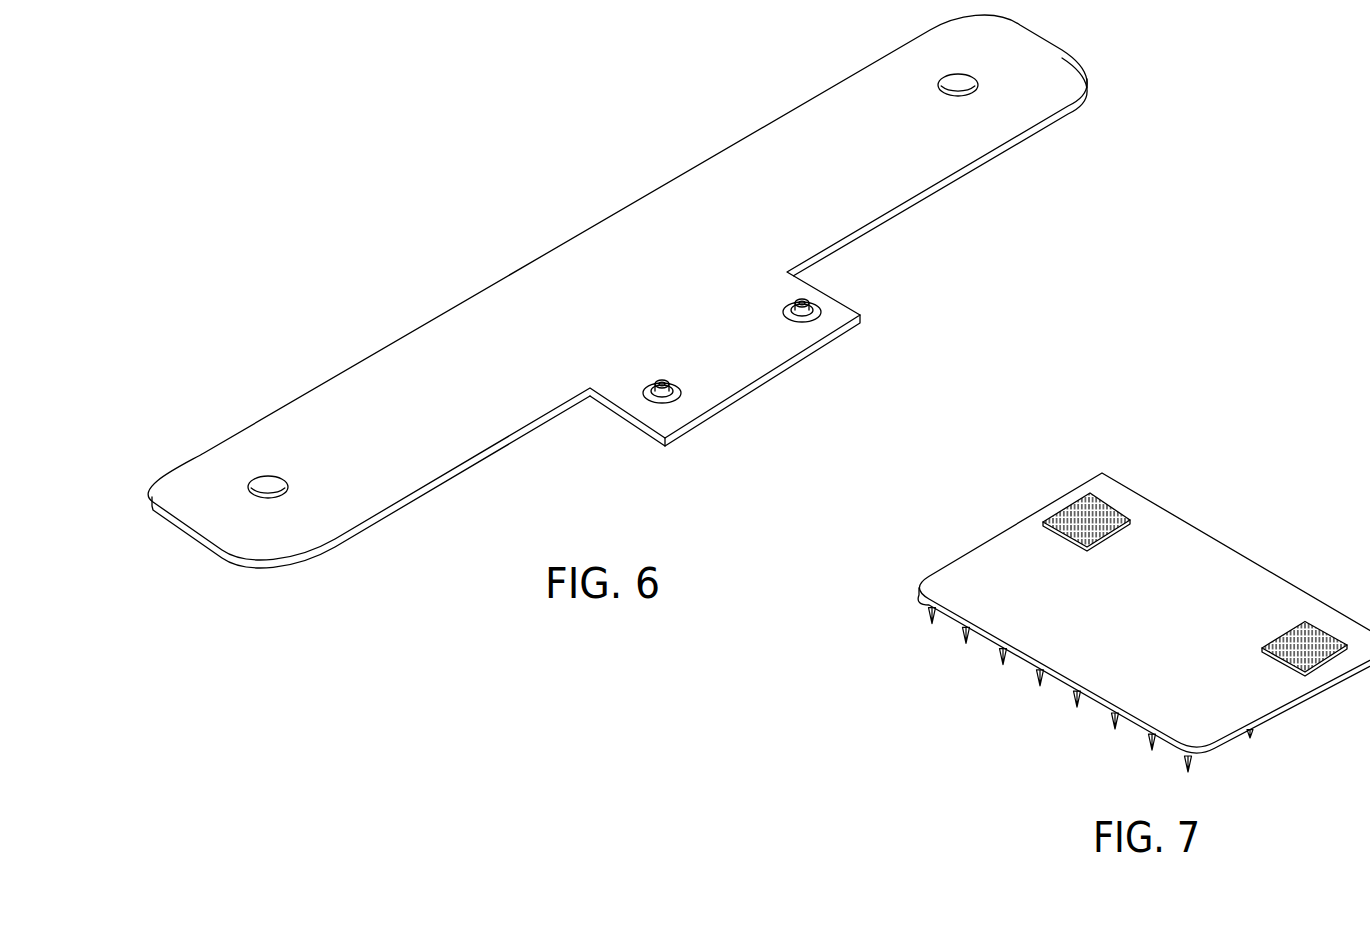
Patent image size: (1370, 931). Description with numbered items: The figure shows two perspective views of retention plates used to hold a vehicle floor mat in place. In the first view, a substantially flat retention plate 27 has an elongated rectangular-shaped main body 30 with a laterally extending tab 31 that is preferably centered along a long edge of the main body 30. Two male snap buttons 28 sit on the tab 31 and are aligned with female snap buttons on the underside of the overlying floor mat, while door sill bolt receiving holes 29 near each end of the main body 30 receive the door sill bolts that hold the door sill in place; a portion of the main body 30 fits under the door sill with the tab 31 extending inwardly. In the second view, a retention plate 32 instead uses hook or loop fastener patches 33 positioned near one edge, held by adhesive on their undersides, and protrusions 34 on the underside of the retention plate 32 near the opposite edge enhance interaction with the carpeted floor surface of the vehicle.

In FIG. 6, the retention plate 27 is at (592, 237).
In FIG. 6, the male snap buttons 28 is at (662, 384).
In FIG. 6, the door sill bolt receiving holes 29 is at (270, 491).
In FIG. 6, the main body 30 is at (365, 383).
In FIG. 6, the tab 31 is at (723, 373).
In FIG. 7, the retention plate 32 is at (1164, 628).
In FIG. 7, the hook or loop fastener patches 33 is at (1063, 509).
In FIG. 7, the protrusions 34 is at (1152, 746).